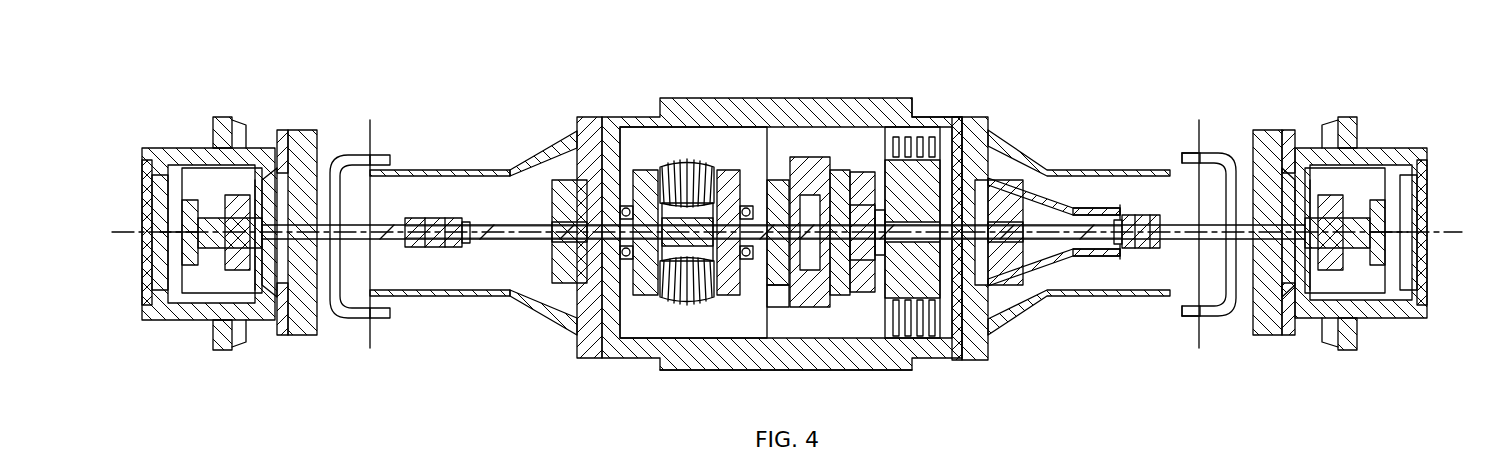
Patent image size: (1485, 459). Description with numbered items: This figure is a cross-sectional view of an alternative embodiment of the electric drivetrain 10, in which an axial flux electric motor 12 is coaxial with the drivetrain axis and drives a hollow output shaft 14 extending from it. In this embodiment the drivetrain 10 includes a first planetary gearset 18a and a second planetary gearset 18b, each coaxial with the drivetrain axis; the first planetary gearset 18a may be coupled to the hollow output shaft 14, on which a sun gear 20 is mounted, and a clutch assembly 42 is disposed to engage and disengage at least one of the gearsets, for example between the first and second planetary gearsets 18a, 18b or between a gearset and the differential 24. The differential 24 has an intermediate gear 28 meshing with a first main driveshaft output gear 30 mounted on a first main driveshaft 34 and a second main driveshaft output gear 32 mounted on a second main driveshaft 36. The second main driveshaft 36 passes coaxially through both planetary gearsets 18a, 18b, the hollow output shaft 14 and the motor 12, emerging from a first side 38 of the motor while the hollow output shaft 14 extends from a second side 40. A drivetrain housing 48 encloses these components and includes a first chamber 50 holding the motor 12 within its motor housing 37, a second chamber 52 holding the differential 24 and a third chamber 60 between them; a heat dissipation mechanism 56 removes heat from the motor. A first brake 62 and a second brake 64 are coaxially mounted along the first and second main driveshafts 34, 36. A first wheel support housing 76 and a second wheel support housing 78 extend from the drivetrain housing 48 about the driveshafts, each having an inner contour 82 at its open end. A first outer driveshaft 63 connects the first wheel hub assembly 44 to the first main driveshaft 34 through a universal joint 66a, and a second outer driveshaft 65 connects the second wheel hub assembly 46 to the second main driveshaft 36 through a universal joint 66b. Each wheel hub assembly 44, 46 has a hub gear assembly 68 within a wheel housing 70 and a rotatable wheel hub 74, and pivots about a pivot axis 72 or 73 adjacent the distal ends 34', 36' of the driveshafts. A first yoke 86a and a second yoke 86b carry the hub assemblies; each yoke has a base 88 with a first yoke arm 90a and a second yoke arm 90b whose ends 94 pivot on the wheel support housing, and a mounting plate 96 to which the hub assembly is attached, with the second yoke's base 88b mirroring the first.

The electric drivetrain 10 is at (1102, 72).
The axial flux electric motor 12 is at (942, 150).
The hollow output shaft 14 is at (907, 215).
The first planetary gearset 18a is at (835, 160).
The second planetary gearset 18b is at (762, 178).
The sun gear 20 is at (852, 180).
The differential 24 is at (673, 168).
The intermediate gear 28 is at (633, 352).
The first main driveshaft output gear 30 is at (676, 152).
The second main driveshaft output gear 32 is at (715, 165).
The first main driveshaft 34 is at (783, 185).
The distal end of first main driveshaft 34' is at (763, 290).
The second main driveshaft 36 is at (1054, 259).
The distal end of second main driveshaft 36' is at (1108, 278).
The motor housing 37 is at (1000, 295).
The first side of axial flux electric motor 38 is at (970, 127).
The second side of axial flux electric motor 40 is at (873, 315).
The clutch assembly 42 is at (797, 310).
The first wheel hub assembly 44 is at (212, 362).
The second wheel hub assembly 46 is at (1349, 368).
The drivetrain housing 48 is at (698, 375).
The first chamber 50 is at (935, 290).
The second chamber 52 is at (597, 337).
The heat dissipation mechanism 56 is at (975, 325).
The third chamber 60 is at (825, 174).
The first brake 62 is at (570, 180).
The first outer driveshaft 63 is at (397, 220).
The second brake 64 is at (1047, 210).
The second outer driveshaft 65 is at (1185, 248).
The universal joint 66a is at (440, 250).
The universal joint 66b is at (1140, 214).
The hub gear assembly 68 is at (210, 212).
The wheel housing 70 is at (194, 310).
The pivot axis 72 is at (373, 133).
The pivot axis 73 is at (1188, 143).
The rotatable wheel hub 74 is at (143, 296).
The first wheel support housing 76 is at (495, 296).
The second wheel support housing 78 is at (1035, 163).
The inner contour 82 is at (347, 158).
The first yoke 86a is at (360, 114).
The second yoke 86b is at (1236, 324).
The base 88 is at (298, 133).
The brake rotor 88b is at (1256, 130).
The first yoke arm 90a is at (1210, 322).
The second yoke arm 90b is at (1182, 150).
The end 94 is at (1207, 150).
The mounting plate 96 is at (303, 323).